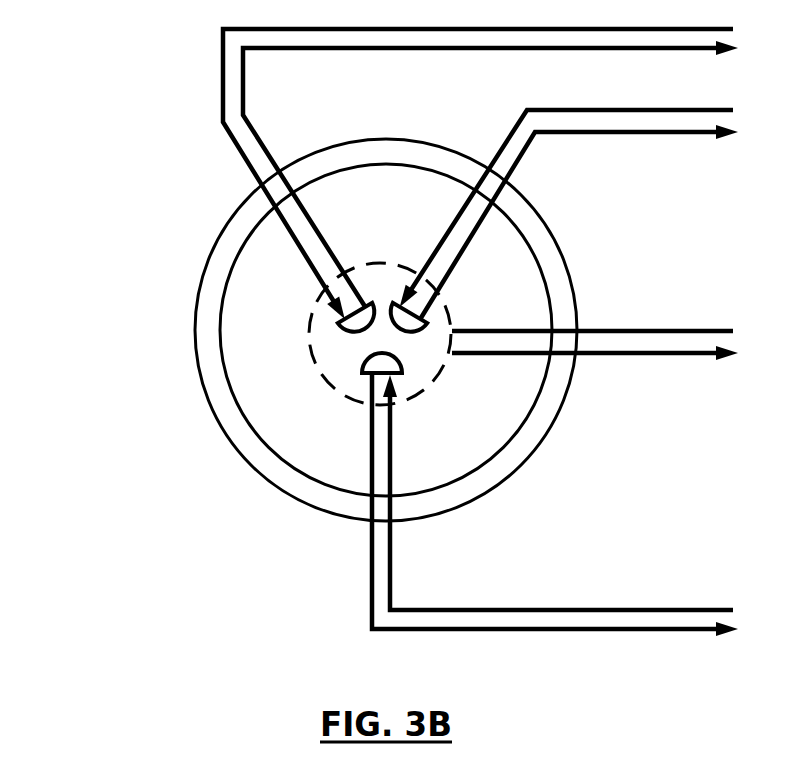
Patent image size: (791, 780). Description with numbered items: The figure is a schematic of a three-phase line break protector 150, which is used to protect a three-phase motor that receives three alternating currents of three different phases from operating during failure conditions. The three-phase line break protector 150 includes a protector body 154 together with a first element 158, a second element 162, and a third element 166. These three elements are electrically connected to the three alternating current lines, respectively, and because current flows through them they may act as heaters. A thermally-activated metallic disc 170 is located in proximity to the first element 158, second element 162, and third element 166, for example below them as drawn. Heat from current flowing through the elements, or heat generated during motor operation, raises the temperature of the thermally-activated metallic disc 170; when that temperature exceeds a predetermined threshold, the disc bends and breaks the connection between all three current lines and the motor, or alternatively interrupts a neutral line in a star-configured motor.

The three-phase line break protector 150 is at (131, 103).
The protector body 154 is at (203, 290).
The first element 158 is at (368, 303).
The second element 162 is at (418, 320).
The third element 166 is at (370, 368).
The thermally-activated metallic disc 170 is at (441, 405).